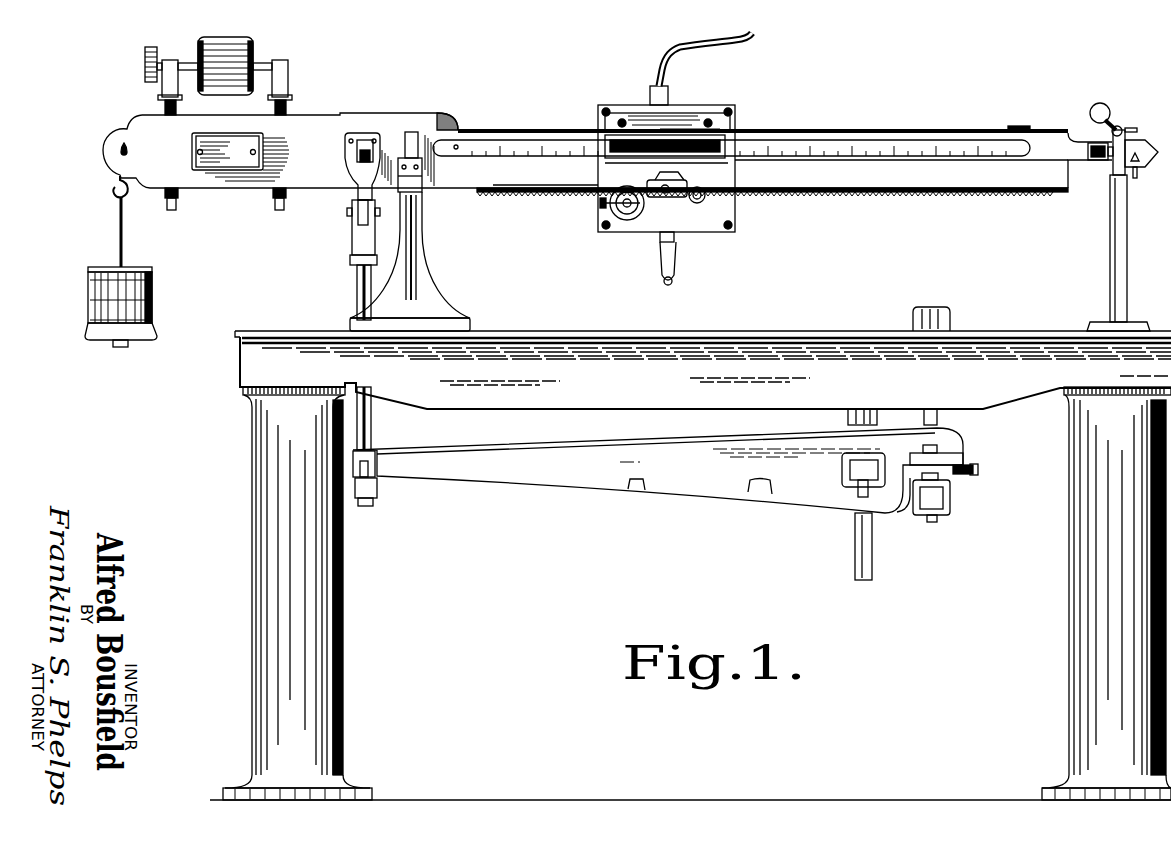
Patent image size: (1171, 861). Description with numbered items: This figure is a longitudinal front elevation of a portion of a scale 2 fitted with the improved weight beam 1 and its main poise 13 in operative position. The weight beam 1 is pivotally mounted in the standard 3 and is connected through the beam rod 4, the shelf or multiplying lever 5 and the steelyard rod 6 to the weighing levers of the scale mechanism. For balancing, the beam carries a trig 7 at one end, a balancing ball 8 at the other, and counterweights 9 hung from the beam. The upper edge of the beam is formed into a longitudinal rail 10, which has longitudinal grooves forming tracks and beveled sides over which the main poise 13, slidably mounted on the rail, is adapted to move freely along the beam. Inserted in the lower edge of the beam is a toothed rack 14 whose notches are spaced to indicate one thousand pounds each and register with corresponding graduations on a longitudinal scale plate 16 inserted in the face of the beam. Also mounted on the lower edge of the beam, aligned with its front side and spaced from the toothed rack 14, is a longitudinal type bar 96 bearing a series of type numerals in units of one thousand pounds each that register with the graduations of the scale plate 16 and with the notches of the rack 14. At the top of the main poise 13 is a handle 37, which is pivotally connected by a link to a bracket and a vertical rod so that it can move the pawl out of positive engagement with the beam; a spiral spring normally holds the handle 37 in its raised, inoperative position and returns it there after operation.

The weight beam 1 is at (445, 180).
The scale 2 is at (236, 372).
The standard 3 is at (430, 256).
The beam rod 4 is at (355, 293).
The shelf or multiplying lever 5 is at (693, 475).
The steelyard rod 6 is at (872, 552).
The trig 7 is at (1112, 120).
The balancing ball 8 is at (253, 45).
The counterweights 9 is at (155, 291).
The longitudinal rail 10 is at (875, 128).
The main poise 13 is at (735, 210).
The toothed rack 14 is at (855, 196).
The longitudinal scale plate 16 is at (490, 150).
The handle 37 is at (718, 50).
The longitudinal type bar 96 is at (950, 192).